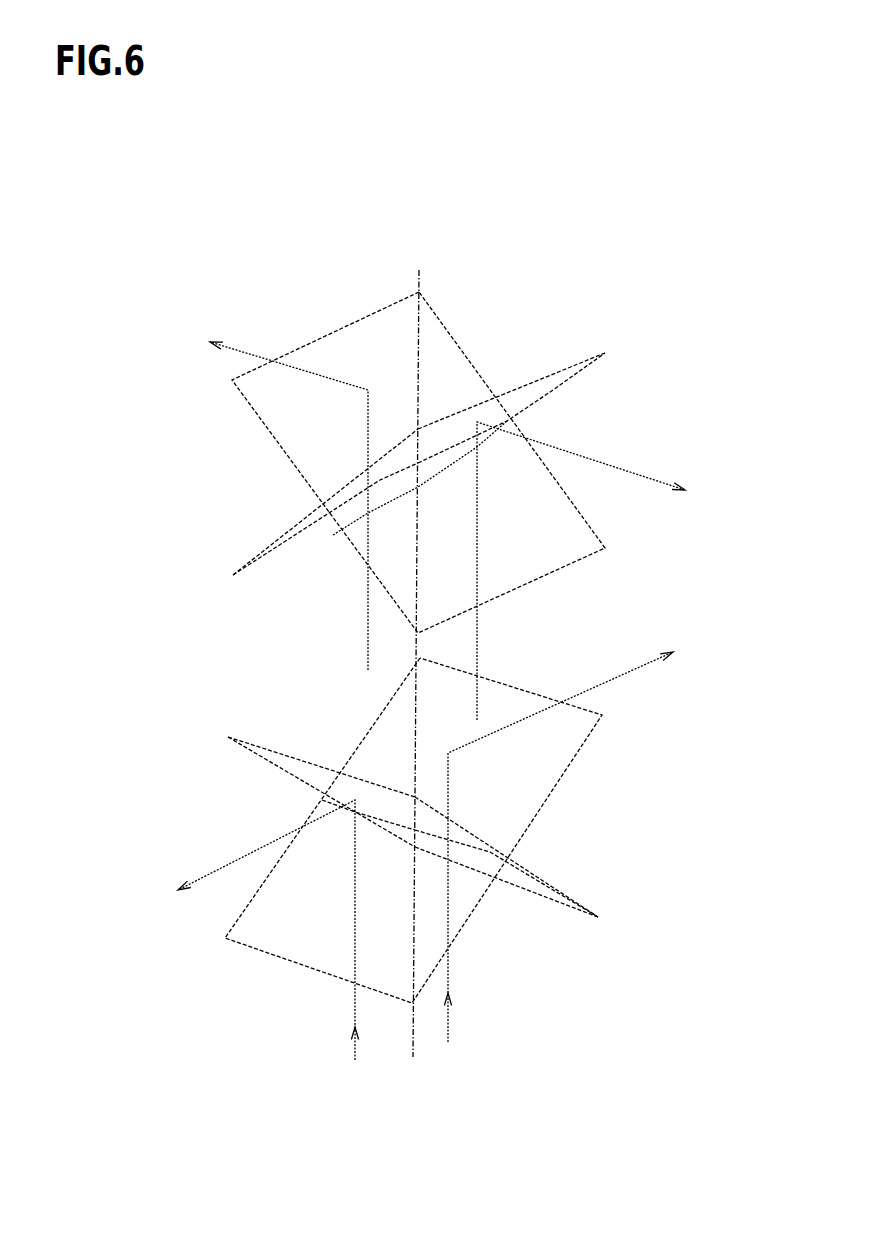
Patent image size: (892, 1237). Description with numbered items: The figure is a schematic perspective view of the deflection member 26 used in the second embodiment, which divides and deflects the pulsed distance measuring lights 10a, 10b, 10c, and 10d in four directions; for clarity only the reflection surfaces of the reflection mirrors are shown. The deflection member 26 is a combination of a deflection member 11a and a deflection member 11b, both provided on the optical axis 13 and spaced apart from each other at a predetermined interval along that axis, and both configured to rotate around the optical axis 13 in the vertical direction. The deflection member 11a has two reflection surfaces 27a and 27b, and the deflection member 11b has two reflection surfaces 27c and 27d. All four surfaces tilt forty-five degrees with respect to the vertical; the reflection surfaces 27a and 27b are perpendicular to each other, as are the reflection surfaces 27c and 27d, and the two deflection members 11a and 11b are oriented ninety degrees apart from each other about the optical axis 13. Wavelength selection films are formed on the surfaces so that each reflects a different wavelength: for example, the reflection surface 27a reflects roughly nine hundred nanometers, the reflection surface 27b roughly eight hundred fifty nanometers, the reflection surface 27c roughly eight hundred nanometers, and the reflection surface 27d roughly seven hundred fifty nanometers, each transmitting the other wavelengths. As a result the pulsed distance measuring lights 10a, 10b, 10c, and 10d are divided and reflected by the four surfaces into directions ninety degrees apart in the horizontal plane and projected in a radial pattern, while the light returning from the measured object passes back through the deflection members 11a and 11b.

The optical axis 13 is at (299, 663).
The deflection member 11a is at (421, 405).
The deflection member 11b is at (392, 863).
The reflection surface 27a is at (276, 494).
The reflection surface 27b is at (536, 432).
The reflection surface 27c is at (276, 787).
The reflection surface 27d is at (567, 835).
The pulsed distance measuring light 10a is at (289, 454).
The pulsed distance measuring light 10b is at (623, 570).
The pulsed distance measuring light 10c is at (243, 930).
The pulsed distance measuring light 10d is at (582, 795).
The deflection member 26 is at (142, 533).